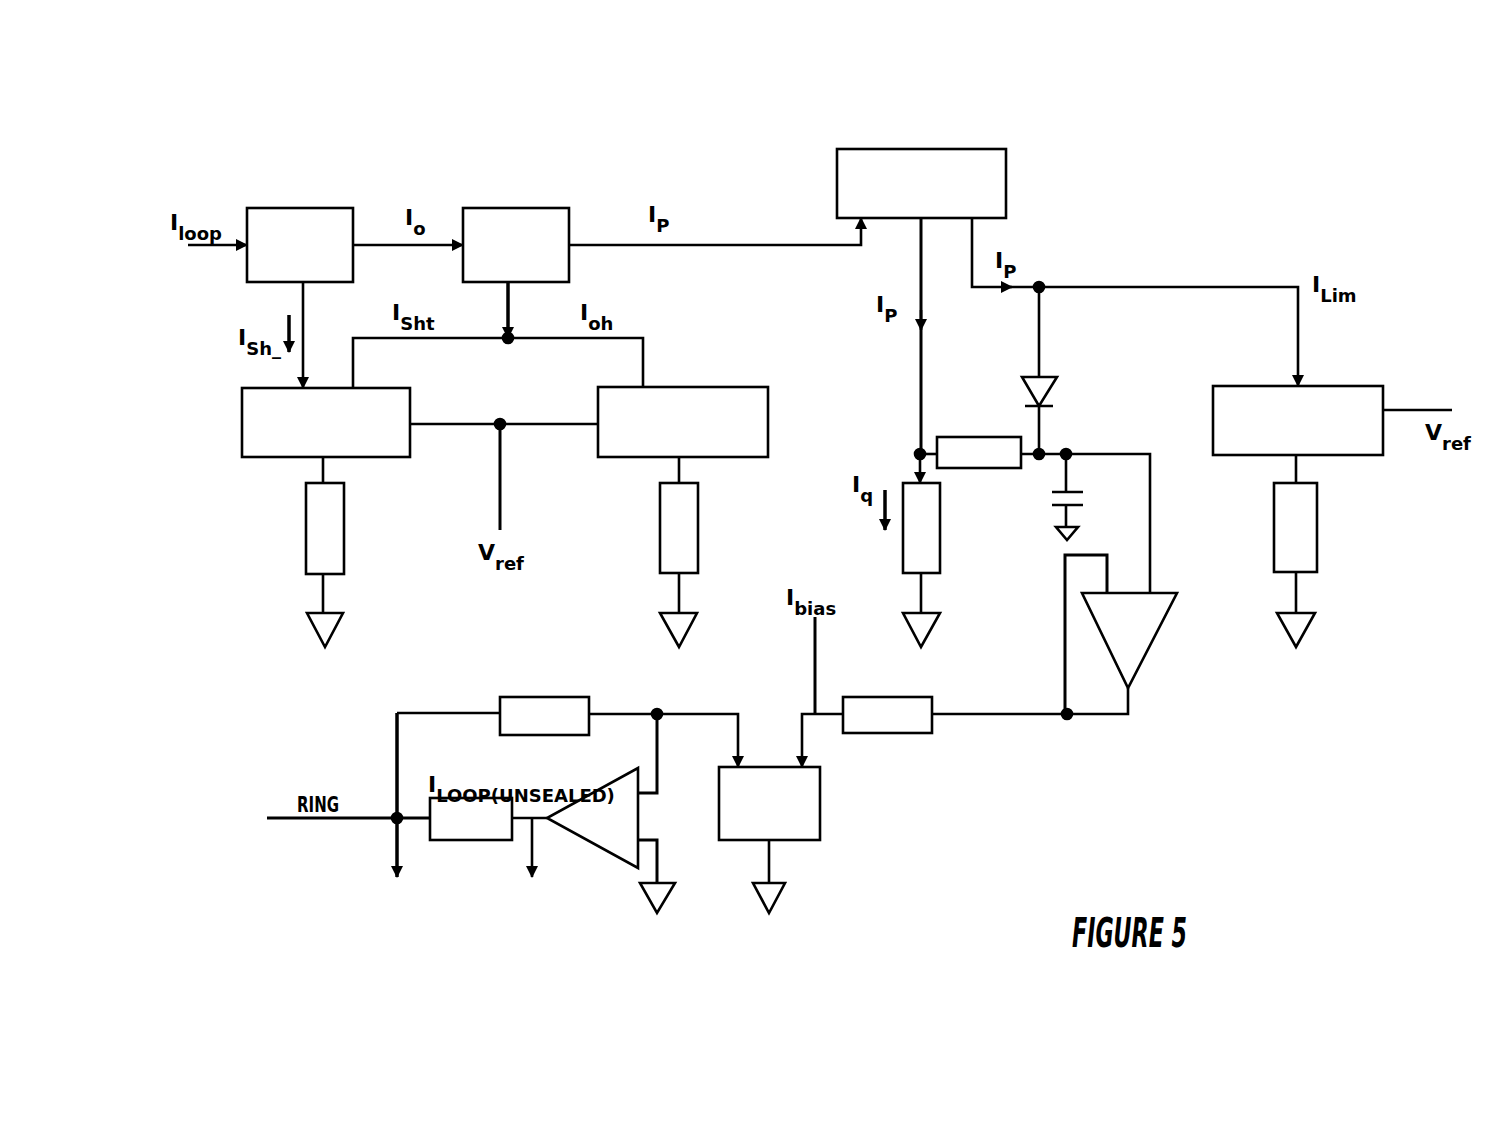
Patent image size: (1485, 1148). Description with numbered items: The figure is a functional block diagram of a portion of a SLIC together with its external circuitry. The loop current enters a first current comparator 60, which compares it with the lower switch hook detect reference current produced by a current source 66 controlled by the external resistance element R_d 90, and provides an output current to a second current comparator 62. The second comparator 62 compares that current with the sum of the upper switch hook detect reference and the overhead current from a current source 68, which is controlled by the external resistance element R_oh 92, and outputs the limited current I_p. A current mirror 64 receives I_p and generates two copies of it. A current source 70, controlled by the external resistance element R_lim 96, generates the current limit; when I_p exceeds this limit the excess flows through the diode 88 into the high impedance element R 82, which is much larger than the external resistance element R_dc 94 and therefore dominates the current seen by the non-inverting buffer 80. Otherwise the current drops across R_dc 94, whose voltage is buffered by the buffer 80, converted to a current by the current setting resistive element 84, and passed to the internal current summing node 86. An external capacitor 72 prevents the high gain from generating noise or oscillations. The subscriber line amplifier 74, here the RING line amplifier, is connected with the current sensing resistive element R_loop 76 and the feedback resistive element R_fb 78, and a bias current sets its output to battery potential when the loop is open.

The first current comparator 60 is at (289, 208).
The second current comparator 62 is at (499, 208).
The current mirror 64 is at (912, 149).
The current source 66 is at (242, 418).
The current source 68 is at (697, 387).
The current source 70 is at (1360, 386).
The external capacitor 72 is at (1057, 508).
The subscriber line amplifier 74 is at (592, 845).
The current sensing resistive element R_loop 76 is at (450, 840).
The feedback resistive element R_fb 78 is at (535, 697).
The non-inverting buffer 80 is at (1155, 637).
The high impedance element R 82 is at (973, 437).
The current setting resistive element 84 is at (902, 733).
The current summing node 86 is at (822, 808).
The diode 88 is at (1045, 390).
The resistance element R_d 90 is at (344, 517).
The resistance element R_oh 92 is at (698, 530).
The resistance element R_dc 94 is at (903, 545).
The resistance element R_lim 96 is at (1317, 507).